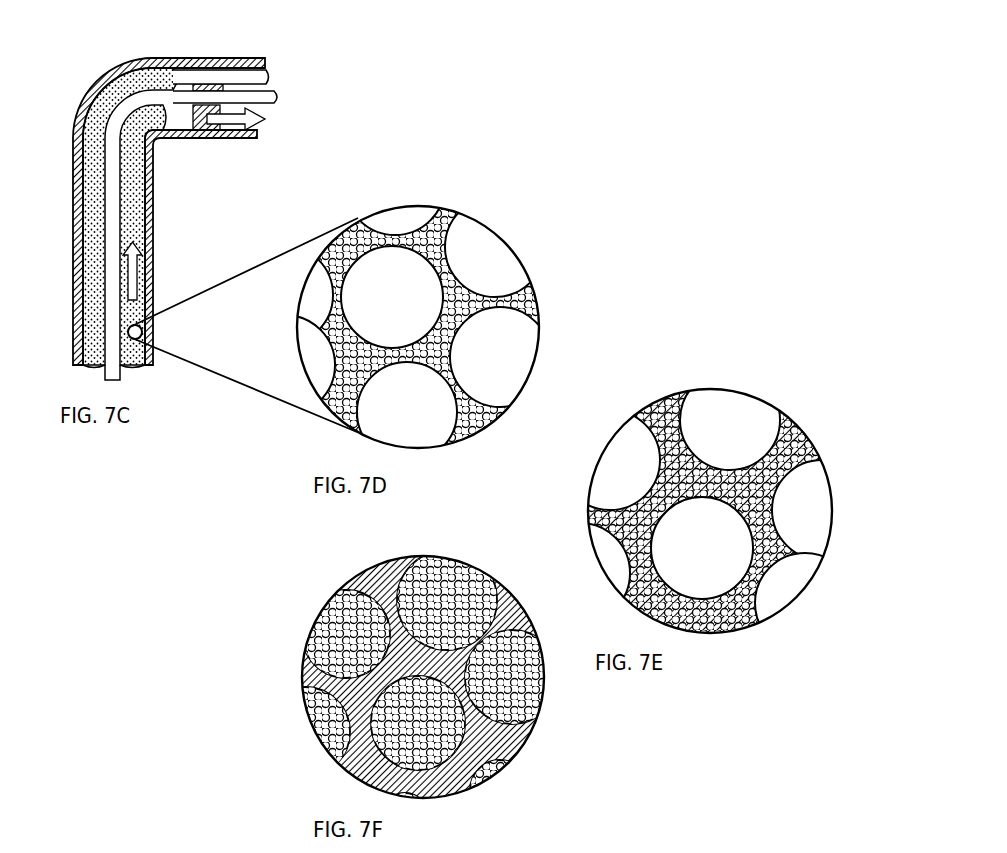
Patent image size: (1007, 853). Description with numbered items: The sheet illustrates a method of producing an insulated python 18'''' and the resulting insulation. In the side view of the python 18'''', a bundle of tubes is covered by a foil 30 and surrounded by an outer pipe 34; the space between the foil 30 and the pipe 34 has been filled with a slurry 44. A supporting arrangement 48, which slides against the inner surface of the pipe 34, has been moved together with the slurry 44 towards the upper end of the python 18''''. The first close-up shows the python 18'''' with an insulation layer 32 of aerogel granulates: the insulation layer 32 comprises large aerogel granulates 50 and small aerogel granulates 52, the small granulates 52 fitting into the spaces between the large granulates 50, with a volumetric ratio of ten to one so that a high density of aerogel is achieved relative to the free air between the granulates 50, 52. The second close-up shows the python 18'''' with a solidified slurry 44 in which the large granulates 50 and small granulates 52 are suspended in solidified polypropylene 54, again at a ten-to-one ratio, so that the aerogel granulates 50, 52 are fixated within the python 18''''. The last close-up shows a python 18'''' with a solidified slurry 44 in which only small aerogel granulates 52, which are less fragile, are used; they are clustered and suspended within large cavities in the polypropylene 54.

In FIG. 7C, the python 18'''' is at (191, 206).
In FIG. 7C, the pipe 34 is at (90, 88).
In FIG. 7C, the slurry 44 is at (137, 170).
In FIG. 7C, the insulation layer 32 is at (270, 74).
In FIG. 7D, the insulation layer 32 is at (399, 298).
In FIG. 7E, the insulation layer 32 is at (701, 485).
In FIG. 7F, the insulation layer 32 is at (438, 693).
In FIG. 7C, the foil 30 is at (278, 97).
In FIG. 7C, the supporting arrangement 48 is at (201, 118).
In FIG. 7D, the large aerogel granulates 50 is at (480, 242).
In FIG. 7E, the large aerogel granulates 50 is at (733, 405).
In FIG. 7D, the small aerogel granulates 52 is at (430, 210).
In FIG. 7E, the small aerogel granulates 52 is at (667, 405).
In FIG. 7F, the small aerogel granulates 52 is at (525, 707).
In FIG. 7E, the polypropylene 54 is at (783, 436).
In FIG. 7F, the polypropylene 54 is at (507, 740).